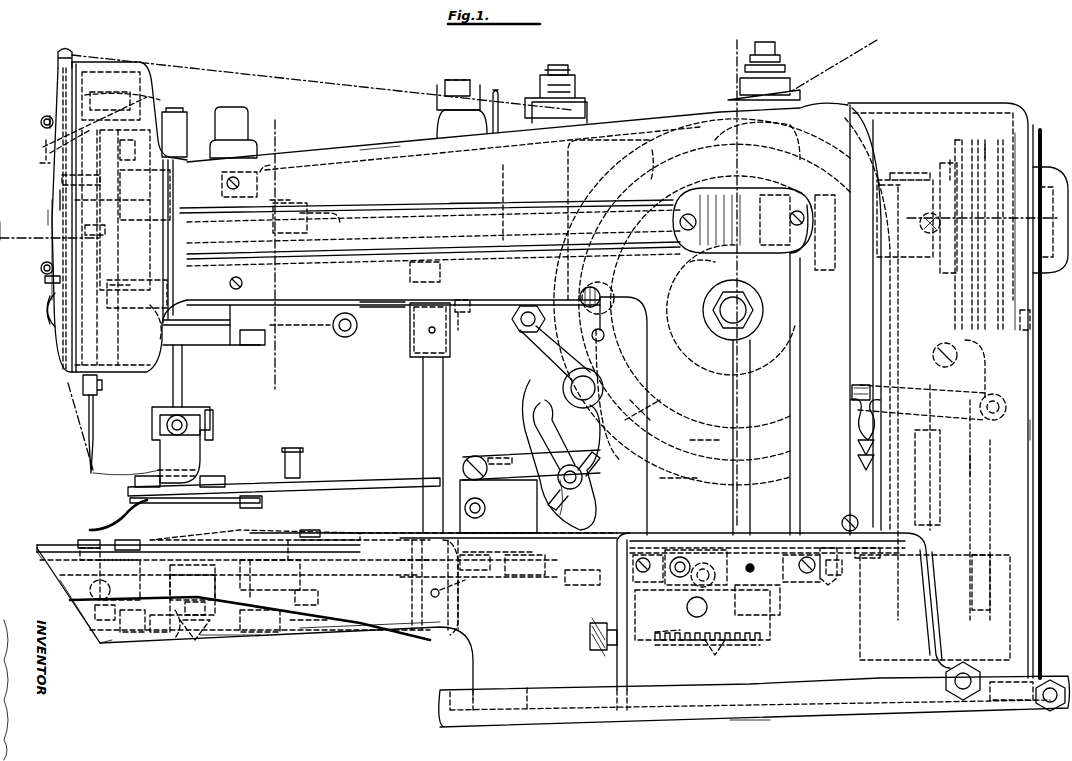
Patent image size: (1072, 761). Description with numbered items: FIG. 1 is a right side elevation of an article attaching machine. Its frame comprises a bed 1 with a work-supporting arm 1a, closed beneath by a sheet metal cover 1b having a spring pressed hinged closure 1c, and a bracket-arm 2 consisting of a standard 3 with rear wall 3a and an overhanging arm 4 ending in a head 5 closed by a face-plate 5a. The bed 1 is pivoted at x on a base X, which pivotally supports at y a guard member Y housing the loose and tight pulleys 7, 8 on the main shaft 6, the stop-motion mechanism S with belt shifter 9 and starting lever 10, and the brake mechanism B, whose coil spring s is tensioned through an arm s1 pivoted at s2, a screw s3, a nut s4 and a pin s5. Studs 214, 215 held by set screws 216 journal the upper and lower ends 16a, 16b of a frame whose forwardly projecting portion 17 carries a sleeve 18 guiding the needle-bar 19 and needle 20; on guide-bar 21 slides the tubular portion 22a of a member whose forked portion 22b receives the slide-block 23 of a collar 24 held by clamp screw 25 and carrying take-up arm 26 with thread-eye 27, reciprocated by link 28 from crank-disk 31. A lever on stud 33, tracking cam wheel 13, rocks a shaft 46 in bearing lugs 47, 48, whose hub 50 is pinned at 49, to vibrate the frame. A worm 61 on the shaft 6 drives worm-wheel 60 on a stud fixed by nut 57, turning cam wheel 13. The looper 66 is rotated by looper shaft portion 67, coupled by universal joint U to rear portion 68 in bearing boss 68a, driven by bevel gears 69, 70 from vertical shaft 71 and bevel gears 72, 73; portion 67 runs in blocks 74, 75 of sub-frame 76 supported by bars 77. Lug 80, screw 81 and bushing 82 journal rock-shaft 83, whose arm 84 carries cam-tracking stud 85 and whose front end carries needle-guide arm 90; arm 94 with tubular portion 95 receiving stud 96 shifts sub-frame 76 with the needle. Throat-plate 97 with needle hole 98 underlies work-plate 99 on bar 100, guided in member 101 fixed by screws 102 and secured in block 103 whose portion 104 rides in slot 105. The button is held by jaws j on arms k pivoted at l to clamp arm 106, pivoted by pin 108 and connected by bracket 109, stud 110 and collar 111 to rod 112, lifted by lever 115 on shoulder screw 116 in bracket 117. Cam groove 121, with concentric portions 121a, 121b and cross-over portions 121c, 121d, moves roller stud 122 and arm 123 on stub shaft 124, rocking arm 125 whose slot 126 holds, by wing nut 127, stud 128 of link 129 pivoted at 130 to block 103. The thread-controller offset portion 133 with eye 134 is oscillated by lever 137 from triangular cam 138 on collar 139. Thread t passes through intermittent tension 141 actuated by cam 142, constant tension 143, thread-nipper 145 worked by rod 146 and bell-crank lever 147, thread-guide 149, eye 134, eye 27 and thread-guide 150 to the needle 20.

The bed 1 is at (540, 641).
The work-supporting arm 1a is at (360, 632).
The removable sheet metal cover 1b is at (225, 640).
The spring pressed hinged closure 1c is at (100, 630).
The bracket-arm 2 is at (636, 318).
The standard 3 is at (1014, 218).
The rear wall of the standard 3a is at (890, 185).
The overhanging arm 4 is at (390, 147).
The bracket-arm head 5 is at (146, 372).
The face-plate 5a is at (60, 200).
The main shaft 6 is at (470, 205).
The loose pulley 7 is at (985, 145).
The tight pulley 8 is at (967, 145).
The belt shifter 9 is at (1035, 320).
The starting lever 10 is at (860, 385).
The cam wheel 13 is at (680, 480).
The upper end of frame 16a is at (249, 138).
The lower end of frame 16b is at (252, 345).
The forwardly projecting portion 17 is at (192, 340).
The sleeve 18 is at (105, 230).
The needle-bar 19 is at (81, 386).
The needle 20 is at (95, 428).
The guide-bar 21 is at (118, 290).
The tubular portion 22a is at (62, 180).
The forked portion 22b is at (160, 101).
The slide-block 23 is at (96, 90).
The collar 24 is at (46, 163).
The clamp screw 25 is at (46, 148).
The take-up arm 26 is at (50, 116).
The thread-eye 27 is at (40, 124).
The link 28 is at (130, 152).
The crank-disk 31 is at (150, 310).
The stud 33 is at (598, 462).
The vertical shaft 46 is at (458, 616).
The bearing lug 47 is at (465, 580).
The bearing lug 48 is at (440, 272).
The pin 49 is at (414, 342).
The hub 50 is at (426, 352).
The nut 57 is at (713, 318).
The worm-wheel 60 is at (690, 276).
The worm 61 is at (726, 186).
The loop-taker 66 is at (80, 593).
The forward portion of looper shaft 67 is at (570, 583).
The rear portion of looper shaft 68 is at (784, 584).
The bearing boss 68a is at (780, 605).
The bevel gear 69 is at (836, 585).
The bevel gear 70 is at (866, 555).
The vertical shaft 71 is at (850, 420).
The bevel gear 72 is at (825, 200).
The bevel gear 73 is at (860, 235).
The bearing block 74 is at (368, 540).
The bearing block 75 is at (125, 540).
The sub-frame 76 is at (288, 540).
The bars 77 is at (318, 597).
The split depending lug 80 is at (157, 640).
The screw 81 is at (132, 640).
The bearing bushing 82 is at (188, 645).
The rock-shaft 83 is at (110, 640).
The arm 84 is at (198, 615).
The stud 85 is at (191, 590).
The curved offset arm 90 is at (92, 608).
The arm 94 is at (310, 640).
The tubular portion 95 is at (262, 585).
The stud 96 is at (258, 640).
The throat-plate 97 is at (40, 555).
The needle hole 98 is at (85, 555).
The work-plate 99 is at (80, 540).
The bar 100 is at (218, 535).
The guideway member 101 is at (345, 534).
The screws 102 is at (333, 528).
The block 103 is at (560, 510).
The guided portion 104 is at (535, 565).
The slot 105 is at (486, 566).
The clamp arm 106 is at (372, 478).
The pin 108 is at (484, 508).
The bracket 109 is at (204, 446).
The stud 110 is at (192, 420).
The collar 111 is at (167, 428).
The rod 112 is at (184, 372).
The lever 115 is at (296, 340).
The shoulder screw 116 is at (345, 336).
The bracket 117 is at (370, 343).
The cam groove 121 is at (640, 396).
The concentric portion 121a is at (708, 438).
The concentric portion 121b is at (653, 160).
The cross-over portion 121c is at (612, 304).
The cross-over portion 121d is at (940, 338).
The roller stud 122 is at (602, 285).
The arm 123 is at (609, 341).
The stub shaft 124 is at (560, 386).
The arm 125 is at (522, 405).
The segmental slot 126 is at (540, 420).
The wing nut 127 is at (575, 502).
The stud 128 is at (585, 480).
The link 129 is at (503, 458).
The pivotal connection 130 is at (475, 457).
The offset portion 133 is at (42, 265).
The thread-eye 134 is at (48, 280).
The lever 137 is at (285, 200).
The triangular cam 138 is at (265, 226).
The collar 139 is at (308, 212).
The intermittent tension 141 is at (790, 80).
The cam 142 is at (806, 195).
The constant tension 143 is at (576, 96).
The thread-nipper 145 is at (438, 103).
The rod 146 is at (468, 345).
The bell-crank lever 147 is at (525, 344).
The thread-guide 149 is at (60, 50).
The thread-guide 150 is at (47, 322).
The stud 214 is at (228, 182).
The stud 215 is at (230, 283).
The set screws 216 is at (246, 285).
The brake mechanism B is at (980, 464).
The stop-motion mechanism S is at (980, 539).
The universal joint U is at (640, 595).
The base X is at (752, 722).
The guard member Y is at (1036, 430).
The spring pressed jaws j is at (108, 525).
The arms k is at (240, 500).
The pivot l is at (252, 505).
The coil spring s is at (715, 656).
The arm s1 is at (686, 585).
The pivot s2 is at (760, 580).
The screw s3 is at (655, 645).
The nut s4 is at (690, 650).
The pin s5 is at (688, 611).
The thread t is at (832, 62).
The pivot x is at (963, 700).
The pivot y is at (1052, 683).